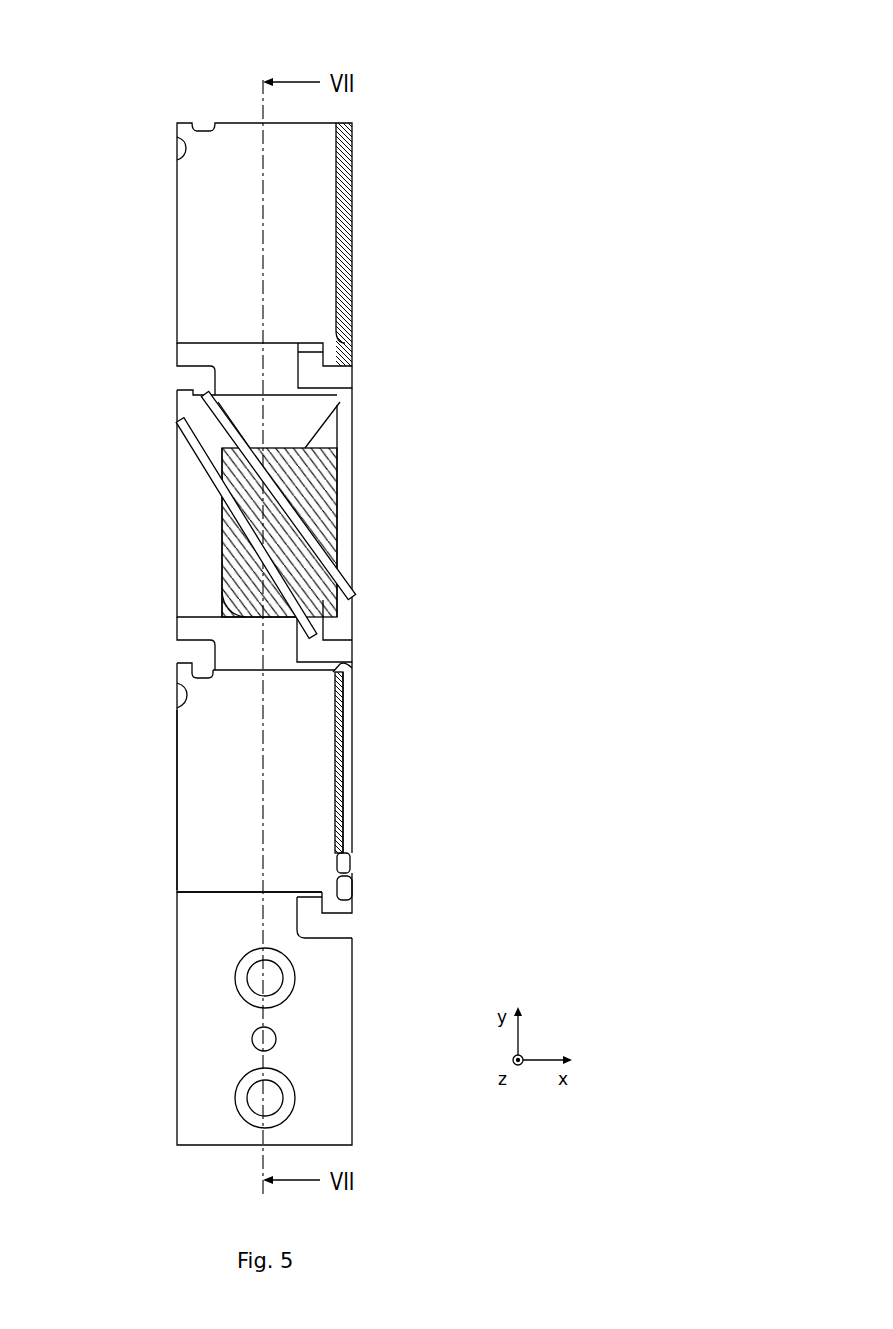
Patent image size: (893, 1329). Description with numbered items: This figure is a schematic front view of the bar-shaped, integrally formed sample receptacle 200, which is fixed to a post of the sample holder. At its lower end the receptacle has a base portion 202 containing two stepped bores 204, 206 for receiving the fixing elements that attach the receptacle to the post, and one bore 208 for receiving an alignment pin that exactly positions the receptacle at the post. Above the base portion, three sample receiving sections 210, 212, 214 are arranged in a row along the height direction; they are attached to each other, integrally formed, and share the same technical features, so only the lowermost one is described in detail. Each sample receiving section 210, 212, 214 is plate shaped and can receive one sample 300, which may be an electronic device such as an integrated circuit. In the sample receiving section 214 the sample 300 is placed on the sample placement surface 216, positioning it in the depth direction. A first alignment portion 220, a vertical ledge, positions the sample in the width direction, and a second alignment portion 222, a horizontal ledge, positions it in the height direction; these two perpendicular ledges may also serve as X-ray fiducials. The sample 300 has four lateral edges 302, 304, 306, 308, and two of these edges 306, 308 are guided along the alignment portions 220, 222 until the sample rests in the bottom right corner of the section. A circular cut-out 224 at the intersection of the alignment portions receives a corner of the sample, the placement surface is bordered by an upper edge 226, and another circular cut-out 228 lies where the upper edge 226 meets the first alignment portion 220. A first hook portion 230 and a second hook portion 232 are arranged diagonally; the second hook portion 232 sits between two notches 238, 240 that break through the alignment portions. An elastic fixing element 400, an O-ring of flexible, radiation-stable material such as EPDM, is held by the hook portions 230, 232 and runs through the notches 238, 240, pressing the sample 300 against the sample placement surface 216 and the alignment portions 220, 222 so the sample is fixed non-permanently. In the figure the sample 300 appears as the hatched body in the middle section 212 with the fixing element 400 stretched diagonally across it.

The sample receptacle 200 is at (212, 80).
The base portion 202 is at (168, 1028).
The stepped bore 204 is at (235, 978).
The stepped bore 206 is at (235, 1105).
The bore 208 is at (256, 1047).
The sample receiving section 210 is at (352, 207).
The sample receiving section 212 is at (352, 468).
The sample receiving section 214 is at (363, 747).
The sample placement surface 216 is at (207, 792).
The first alignment portion 220 is at (354, 692).
The second alignment portion 222 is at (210, 892).
The circular cut-out 224 is at (352, 898).
The upper edge 226 is at (237, 670).
The circular cut-out 228 is at (340, 670).
The first hook portion 230 is at (177, 668).
The second hook portion 232 is at (355, 907).
The notch 238 is at (350, 867).
The notch 240 is at (310, 893).
The sample 300 is at (214, 565).
The lateral edge 302 is at (222, 518).
The lateral edge 304 is at (345, 400).
The lateral edge 306 is at (338, 504).
The lateral edge 308 is at (222, 590).
The elastic fixing element 400 is at (196, 462).